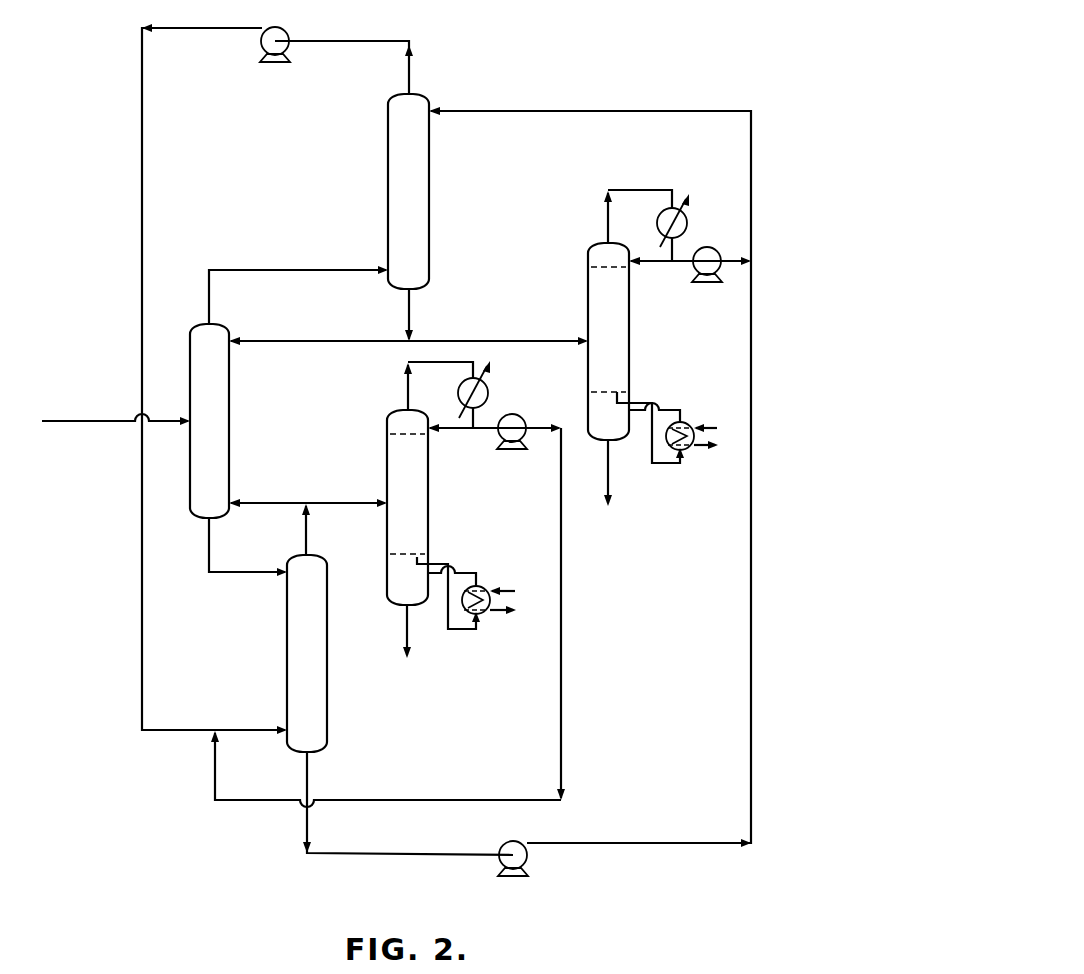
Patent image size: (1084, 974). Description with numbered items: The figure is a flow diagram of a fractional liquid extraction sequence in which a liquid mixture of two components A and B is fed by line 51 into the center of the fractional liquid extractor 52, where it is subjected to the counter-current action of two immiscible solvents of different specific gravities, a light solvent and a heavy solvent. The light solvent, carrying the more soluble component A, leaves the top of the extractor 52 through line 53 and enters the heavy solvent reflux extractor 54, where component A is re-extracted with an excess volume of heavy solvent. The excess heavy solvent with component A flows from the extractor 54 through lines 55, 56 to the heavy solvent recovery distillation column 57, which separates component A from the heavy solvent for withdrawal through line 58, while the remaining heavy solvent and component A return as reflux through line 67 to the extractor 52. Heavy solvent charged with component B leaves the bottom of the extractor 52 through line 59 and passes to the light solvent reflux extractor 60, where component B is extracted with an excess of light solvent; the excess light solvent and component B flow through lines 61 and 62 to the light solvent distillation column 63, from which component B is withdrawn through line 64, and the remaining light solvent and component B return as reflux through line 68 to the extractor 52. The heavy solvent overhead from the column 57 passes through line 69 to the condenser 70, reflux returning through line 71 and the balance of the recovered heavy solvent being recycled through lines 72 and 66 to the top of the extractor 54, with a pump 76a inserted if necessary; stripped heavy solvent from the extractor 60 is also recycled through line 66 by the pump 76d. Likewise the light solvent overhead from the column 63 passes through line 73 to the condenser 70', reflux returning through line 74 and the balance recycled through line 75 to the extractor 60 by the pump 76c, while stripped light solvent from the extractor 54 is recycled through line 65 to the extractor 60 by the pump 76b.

The line 51 is at (116, 413).
The fractional liquid extractor 52 is at (200, 433).
The line 53 is at (298, 286).
The heavy solvent reflux extractor 54 is at (400, 208).
The line 55 is at (420, 315).
The line 56 is at (498, 333).
The heavy solvent recovery distillation column 57 is at (598, 338).
The line 58 is at (617, 488).
The line 59 is at (235, 547).
The light solvent reflux extractor 60 is at (298, 654).
The line 61 is at (316, 529).
The line 62 is at (346, 496).
The light solvent distillation column 63 is at (398, 516).
The line 64 is at (394, 644).
The line 65 is at (262, 377).
The line 66 is at (527, 472).
The line 67 is at (319, 334).
The line 68 is at (267, 496).
The line 69 is at (638, 216).
The condenser 70 is at (687, 220).
The condenser 70' is at (488, 389).
The line 71 is at (668, 271).
The line 72 is at (729, 249).
The line 73 is at (438, 385).
The line 74 is at (470, 419).
The line 75 is at (401, 615).
The pump 76a is at (705, 275).
The pump 76b is at (275, 55).
The pump 76c is at (509, 442).
The pump 76d is at (512, 870).